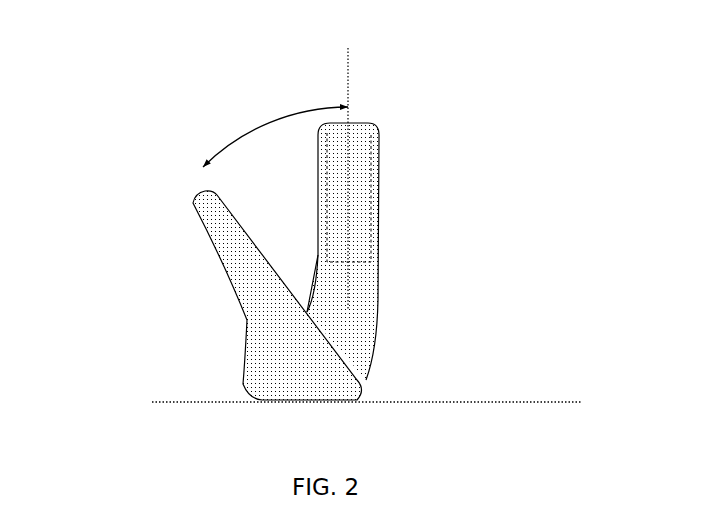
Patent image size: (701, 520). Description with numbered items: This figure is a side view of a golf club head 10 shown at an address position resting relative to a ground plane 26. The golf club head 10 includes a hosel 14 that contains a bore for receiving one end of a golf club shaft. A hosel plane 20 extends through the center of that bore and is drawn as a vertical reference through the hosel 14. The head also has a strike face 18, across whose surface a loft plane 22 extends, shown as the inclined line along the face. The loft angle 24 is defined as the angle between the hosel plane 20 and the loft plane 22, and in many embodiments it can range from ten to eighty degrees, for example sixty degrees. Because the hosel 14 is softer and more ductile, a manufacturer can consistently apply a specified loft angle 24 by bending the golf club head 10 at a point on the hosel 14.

The golf club head 10 is at (297, 250).
The hosel 14 is at (380, 150).
The strike face 18 is at (317, 320).
The hosel plane 20 is at (351, 168).
The loft plane 22 is at (213, 188).
The loft angle 24 is at (275, 132).
The ground plane 26 is at (355, 401).